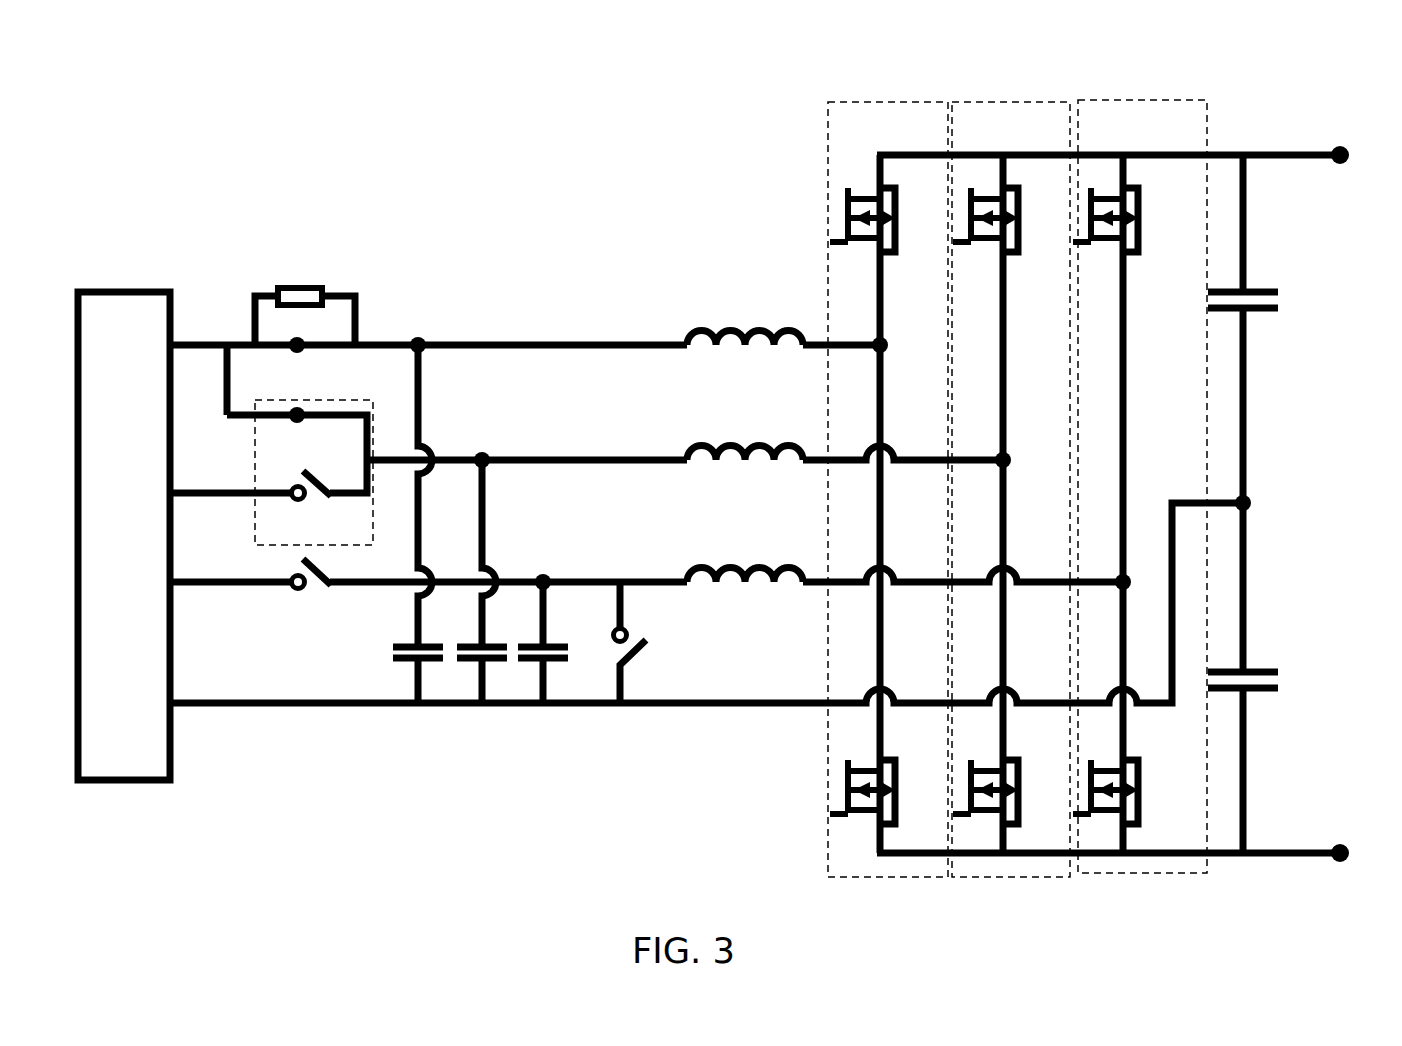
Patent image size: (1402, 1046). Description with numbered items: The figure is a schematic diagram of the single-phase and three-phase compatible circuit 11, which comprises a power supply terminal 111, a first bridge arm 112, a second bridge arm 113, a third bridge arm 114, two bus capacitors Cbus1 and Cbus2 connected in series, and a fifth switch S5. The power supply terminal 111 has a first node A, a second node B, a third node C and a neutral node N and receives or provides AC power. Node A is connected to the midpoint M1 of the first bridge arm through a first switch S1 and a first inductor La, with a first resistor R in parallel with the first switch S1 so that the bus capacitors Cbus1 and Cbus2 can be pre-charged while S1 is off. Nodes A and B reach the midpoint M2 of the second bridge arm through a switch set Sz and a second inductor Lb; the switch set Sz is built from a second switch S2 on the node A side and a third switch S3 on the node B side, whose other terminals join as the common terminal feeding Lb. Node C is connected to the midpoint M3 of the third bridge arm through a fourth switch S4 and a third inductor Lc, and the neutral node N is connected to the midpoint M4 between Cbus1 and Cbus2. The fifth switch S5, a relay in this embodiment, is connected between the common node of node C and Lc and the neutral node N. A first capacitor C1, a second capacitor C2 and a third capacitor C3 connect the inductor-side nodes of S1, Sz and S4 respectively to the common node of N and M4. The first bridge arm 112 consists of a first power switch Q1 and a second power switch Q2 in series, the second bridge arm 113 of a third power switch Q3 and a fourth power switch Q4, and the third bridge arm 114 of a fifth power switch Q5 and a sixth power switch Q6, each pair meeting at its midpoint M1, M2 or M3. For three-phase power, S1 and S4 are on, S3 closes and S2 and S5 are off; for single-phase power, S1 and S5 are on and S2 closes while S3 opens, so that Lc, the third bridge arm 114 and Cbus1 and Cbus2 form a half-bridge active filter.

The single-phase and three-phase compatible circuit 11 is at (283, 78).
The power supply terminal 111 is at (146, 290).
The first bridge arm 112 is at (828, 113).
The second bridge arm 113 is at (1013, 877).
The third bridge arm 114 is at (1143, 100).
The first resistor R is at (305, 293).
The switch set Sz is at (357, 400).
The first switch S1 is at (269, 376).
The second switch S2 is at (297, 450).
The third switch S3 is at (304, 508).
The fourth switch S4 is at (305, 600).
The fifth switch S5 is at (653, 642).
The first capacitor C1 is at (402, 520).
The second capacitor C2 is at (470, 577).
The third capacitor C3 is at (530, 638).
The first inductor La is at (745, 314).
The second inductor Lb is at (745, 427).
The third inductor Lc is at (745, 548).
The midpoint of the first bridge arm M1 is at (898, 347).
The midpoint of the second bridge arm M2 is at (1027, 465).
The midpoint of the third bridge arm M3 is at (1104, 600).
The midpoint connected to the bus capacitors M4 is at (1270, 505).
The first power switch Q1 is at (884, 220).
The second power switch Q2 is at (886, 792).
The third power switch Q3 is at (1007, 220).
The fourth power switch Q4 is at (1009, 792).
The fifth power switch Q5 is at (1129, 220).
The sixth power switch Q6 is at (1130, 792).
The bus capacitor Cbus1 is at (1295, 329).
The bus capacitor Cbus2 is at (1301, 678).